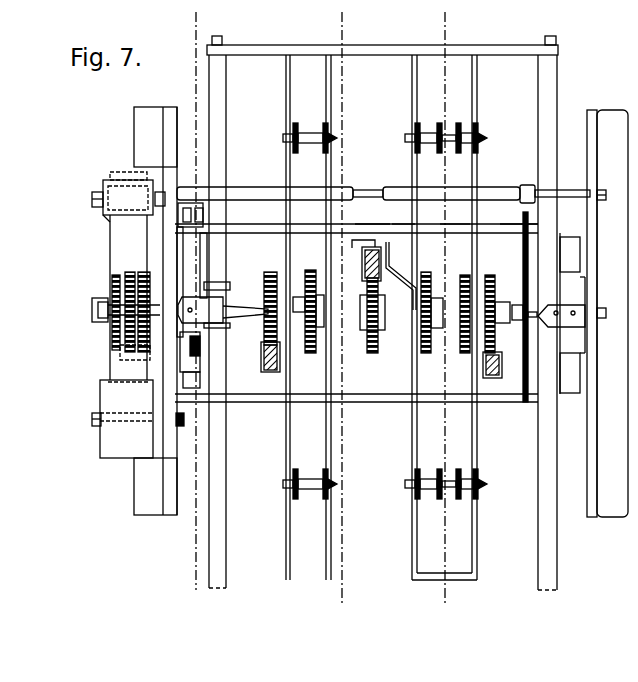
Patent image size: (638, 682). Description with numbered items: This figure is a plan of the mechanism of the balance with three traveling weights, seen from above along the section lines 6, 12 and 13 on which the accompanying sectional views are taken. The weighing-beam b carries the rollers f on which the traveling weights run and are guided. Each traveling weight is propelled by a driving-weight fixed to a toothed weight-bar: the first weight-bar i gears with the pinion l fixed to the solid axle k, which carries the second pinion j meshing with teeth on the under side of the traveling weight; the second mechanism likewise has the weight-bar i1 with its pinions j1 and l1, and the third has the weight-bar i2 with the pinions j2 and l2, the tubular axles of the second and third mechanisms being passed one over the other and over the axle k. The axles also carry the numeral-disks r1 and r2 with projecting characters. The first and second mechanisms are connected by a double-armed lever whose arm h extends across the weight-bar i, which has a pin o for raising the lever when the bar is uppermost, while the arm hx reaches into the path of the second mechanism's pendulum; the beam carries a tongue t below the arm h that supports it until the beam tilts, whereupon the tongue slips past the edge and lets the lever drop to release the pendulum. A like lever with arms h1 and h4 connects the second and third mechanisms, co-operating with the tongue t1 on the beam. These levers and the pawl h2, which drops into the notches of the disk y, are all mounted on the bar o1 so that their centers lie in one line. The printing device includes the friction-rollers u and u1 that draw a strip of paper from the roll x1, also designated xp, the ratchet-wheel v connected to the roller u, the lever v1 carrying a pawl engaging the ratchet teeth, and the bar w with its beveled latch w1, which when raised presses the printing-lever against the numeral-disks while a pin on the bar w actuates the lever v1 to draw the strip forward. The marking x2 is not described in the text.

The section line 6 6 is at (191, 307).
The section line 12 12 is at (344, 308).
The section line 13 13 is at (446, 308).
The weighing-beam b is at (382, 313).
The rollers f is at (385, 312).
The bar o1 is at (383, 187).
The arm of double-armed lever h is at (265, 219).
The arm of double-armed lever hx is at (347, 228).
The arm of lever h1 is at (403, 217).
The arm of lever h4 is at (467, 219).
The pawl h2 is at (527, 219).
The friction-roller u1 is at (128, 193).
The friction-roller u is at (101, 223).
The numeral-disk r1 is at (130, 272).
The numeral-disk r2 is at (116, 275).
The roll x1 is at (135, 419).
The ratchet-wheel v is at (193, 176).
The lever v1 is at (192, 282).
The tongue t is at (223, 310).
The axle k is at (264, 311).
The latch w1 is at (180, 352).
The bar w is at (191, 380).
The pinion j is at (270, 297).
The weight-bar i is at (261, 367).
The pin o is at (258, 352).
The pinion l is at (320, 349).
The pinion j1 is at (375, 315).
The weight-bar i1 is at (362, 264).
The roll xp is at (401, 276).
The pinion l1 is at (432, 312).
The pinion l2 is at (461, 314).
The pinion j2 is at (504, 314).
The lever x2 is at (515, 338).
The weight-bar i2 is at (502, 360).
The notched disk y is at (530, 307).
The tongue t1 is at (561, 321).